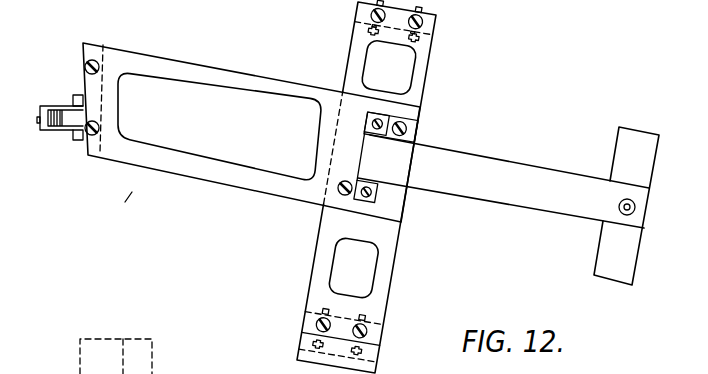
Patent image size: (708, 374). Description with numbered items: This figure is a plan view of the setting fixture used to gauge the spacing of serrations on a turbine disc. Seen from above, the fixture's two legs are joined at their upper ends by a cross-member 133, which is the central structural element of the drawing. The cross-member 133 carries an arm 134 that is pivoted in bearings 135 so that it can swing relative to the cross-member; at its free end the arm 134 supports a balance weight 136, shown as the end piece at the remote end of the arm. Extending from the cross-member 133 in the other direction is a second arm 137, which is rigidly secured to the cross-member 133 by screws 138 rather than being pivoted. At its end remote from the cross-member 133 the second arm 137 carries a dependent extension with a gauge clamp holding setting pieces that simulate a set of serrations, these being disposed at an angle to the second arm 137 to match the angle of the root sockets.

The cross-member 133 is at (384, 264).
The arm 134 is at (472, 188).
The bearings 135 is at (380, 133).
The balance weight 136 is at (605, 270).
The second arm 137 is at (185, 167).
The screws 138 is at (408, 124).